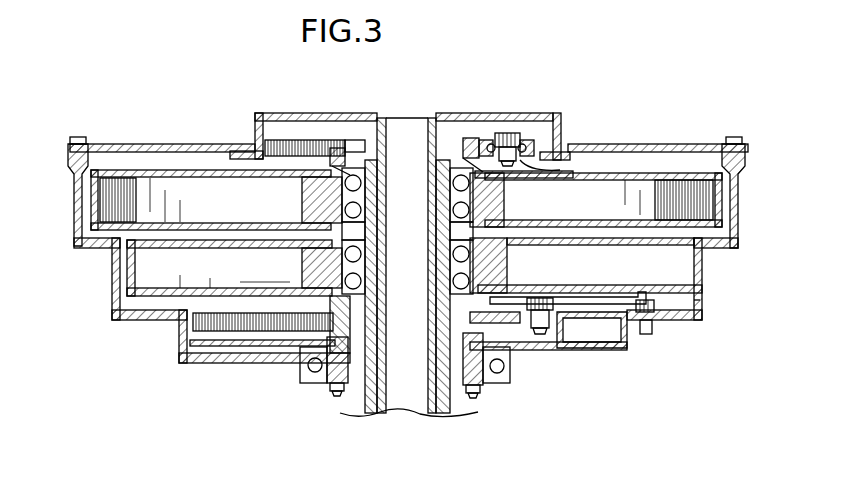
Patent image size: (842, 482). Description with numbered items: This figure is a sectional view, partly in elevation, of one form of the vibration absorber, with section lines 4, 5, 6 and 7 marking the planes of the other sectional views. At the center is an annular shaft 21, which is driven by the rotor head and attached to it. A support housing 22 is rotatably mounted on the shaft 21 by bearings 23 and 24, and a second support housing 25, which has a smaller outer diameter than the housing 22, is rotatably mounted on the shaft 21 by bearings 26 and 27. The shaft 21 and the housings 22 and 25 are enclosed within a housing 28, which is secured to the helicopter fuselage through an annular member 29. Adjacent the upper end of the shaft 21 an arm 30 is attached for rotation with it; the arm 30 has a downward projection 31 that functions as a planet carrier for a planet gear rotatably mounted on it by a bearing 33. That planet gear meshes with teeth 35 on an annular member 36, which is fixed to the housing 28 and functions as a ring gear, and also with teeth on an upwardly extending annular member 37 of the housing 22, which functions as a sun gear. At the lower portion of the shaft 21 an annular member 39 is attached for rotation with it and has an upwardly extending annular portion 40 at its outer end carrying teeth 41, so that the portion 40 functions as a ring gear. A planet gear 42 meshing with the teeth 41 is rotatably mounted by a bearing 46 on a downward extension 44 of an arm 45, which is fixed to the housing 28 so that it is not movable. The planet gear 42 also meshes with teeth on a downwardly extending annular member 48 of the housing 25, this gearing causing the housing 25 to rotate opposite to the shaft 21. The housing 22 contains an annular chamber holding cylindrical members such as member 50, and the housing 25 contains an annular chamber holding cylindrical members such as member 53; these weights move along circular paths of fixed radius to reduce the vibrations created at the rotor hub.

The section line 4- 4 is at (248, 128).
The section line 5- 5 is at (102, 300).
The section line 6- 6 is at (405, 192).
The section line 7- 7 is at (420, 246).
The annular shaft 21 is at (472, 388).
The support housing 22 is at (724, 210).
The bearing 23 is at (338, 168).
The bearing 24 is at (332, 205).
The second support housing 25 is at (692, 300).
The bearing 26 is at (470, 256).
The bearing 27 is at (455, 285).
The housing 28 is at (700, 146).
The annular member 29 is at (432, 145).
The arm 30 is at (472, 150).
The downward projection 31 is at (510, 150).
The bearing 33 is at (540, 158).
The teeth 35 is at (285, 140).
The annular member 36 is at (560, 173).
The upwardly extending annular member 37 is at (484, 160).
The annular member 39 is at (585, 352).
The upwardly extending annular portion 40 is at (600, 334).
The teeth 41 is at (215, 330).
The planet gear 42 is at (590, 332).
The downward extension 44 is at (540, 330).
The arm 45 is at (590, 298).
The bearing 46 is at (560, 325).
The downwardly extending annular member 48 is at (450, 290).
The cylindrical member 50 is at (596, 210).
The cylindrical member 53 is at (208, 277).